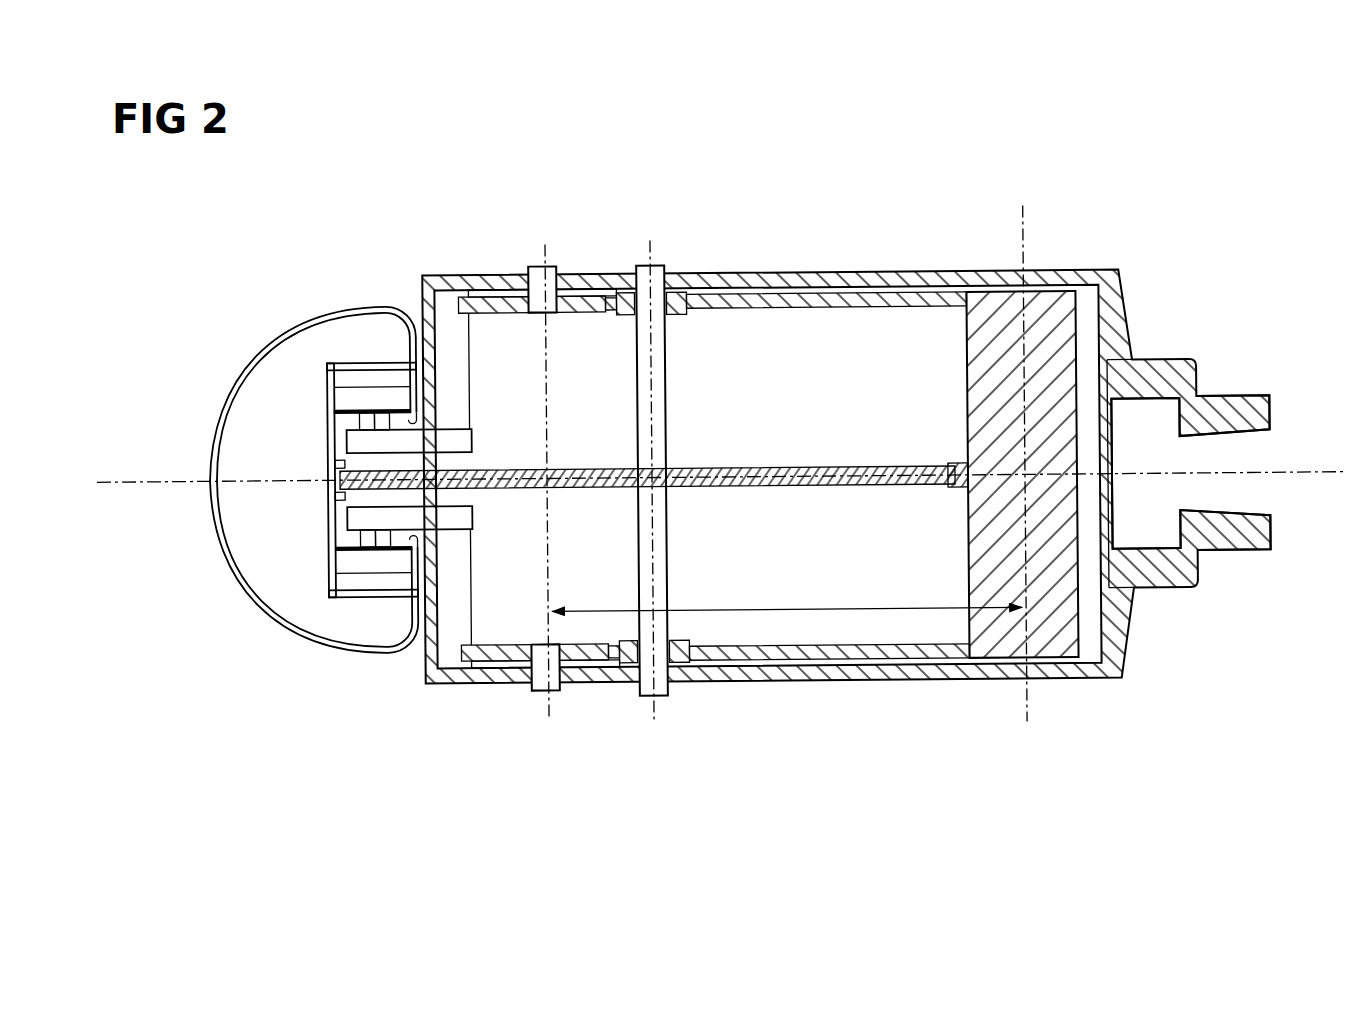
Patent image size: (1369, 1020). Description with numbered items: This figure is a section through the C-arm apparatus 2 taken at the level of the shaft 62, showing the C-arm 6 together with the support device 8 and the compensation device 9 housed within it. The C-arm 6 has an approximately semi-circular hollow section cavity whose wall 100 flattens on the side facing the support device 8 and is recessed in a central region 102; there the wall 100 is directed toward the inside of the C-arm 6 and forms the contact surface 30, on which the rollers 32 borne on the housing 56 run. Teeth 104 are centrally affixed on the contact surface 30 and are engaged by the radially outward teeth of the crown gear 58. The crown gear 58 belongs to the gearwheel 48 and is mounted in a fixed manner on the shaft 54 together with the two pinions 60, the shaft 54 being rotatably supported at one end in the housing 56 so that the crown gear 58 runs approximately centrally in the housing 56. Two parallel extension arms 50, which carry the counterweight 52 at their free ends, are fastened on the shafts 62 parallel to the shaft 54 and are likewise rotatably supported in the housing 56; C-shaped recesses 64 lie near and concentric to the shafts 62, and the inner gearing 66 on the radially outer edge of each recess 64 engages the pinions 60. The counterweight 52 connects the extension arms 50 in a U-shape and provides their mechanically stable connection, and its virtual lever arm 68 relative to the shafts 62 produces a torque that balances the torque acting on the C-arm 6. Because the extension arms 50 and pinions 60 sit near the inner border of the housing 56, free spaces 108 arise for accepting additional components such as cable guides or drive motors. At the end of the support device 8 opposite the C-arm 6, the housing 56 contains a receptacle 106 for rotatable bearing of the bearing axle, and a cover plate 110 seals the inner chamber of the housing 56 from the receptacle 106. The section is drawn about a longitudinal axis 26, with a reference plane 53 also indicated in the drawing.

The C-arm apparatus 2 is at (1232, 272).
The C-arm 6 is at (262, 296).
The support device 8 is at (1011, 200).
The compensation device 9 is at (1019, 763).
The longitudinal axis 26 is at (140, 477).
The contact surface 30 is at (350, 508).
The rollers 32 is at (347, 396).
The gearwheel 48 is at (683, 563).
The extension arms 50 is at (830, 292).
The counterweight 52 is at (1052, 613).
The plane 53 is at (1028, 228).
The shaft 54 is at (668, 383).
The housing 56 is at (440, 640).
The crown gear 58 is at (848, 466).
The pinions 60 is at (622, 292).
The shafts 62 is at (540, 266).
The C-shaped recesses 64 is at (598, 288).
The inner gearings 66 is at (683, 299).
The virtual lever arm 68 is at (867, 612).
The wall 100 is at (320, 308).
The central region 102 is at (411, 460).
The teeth 104 is at (333, 462).
The receptacle 106 is at (1233, 484).
The free spaces 108 is at (920, 387).
The cover plate 110 is at (1108, 463).